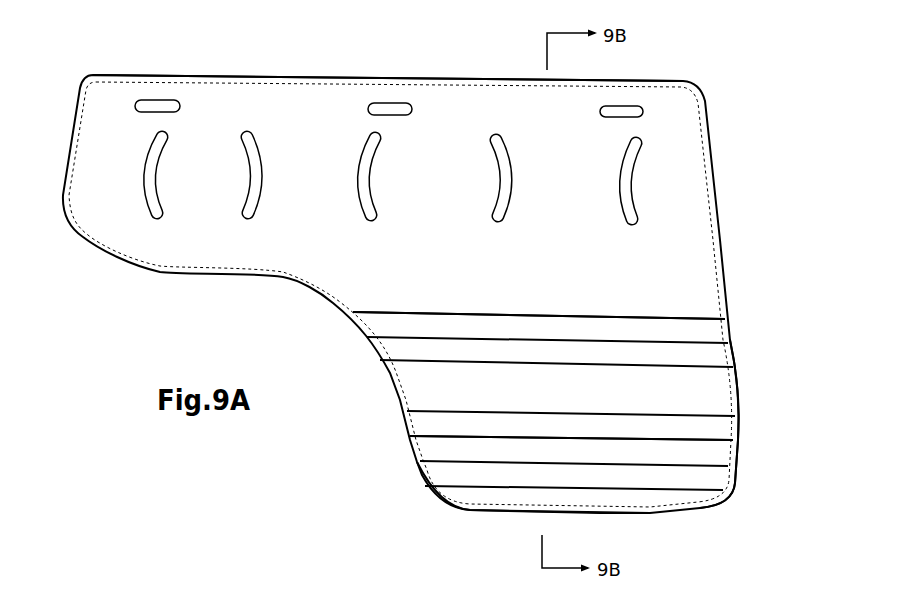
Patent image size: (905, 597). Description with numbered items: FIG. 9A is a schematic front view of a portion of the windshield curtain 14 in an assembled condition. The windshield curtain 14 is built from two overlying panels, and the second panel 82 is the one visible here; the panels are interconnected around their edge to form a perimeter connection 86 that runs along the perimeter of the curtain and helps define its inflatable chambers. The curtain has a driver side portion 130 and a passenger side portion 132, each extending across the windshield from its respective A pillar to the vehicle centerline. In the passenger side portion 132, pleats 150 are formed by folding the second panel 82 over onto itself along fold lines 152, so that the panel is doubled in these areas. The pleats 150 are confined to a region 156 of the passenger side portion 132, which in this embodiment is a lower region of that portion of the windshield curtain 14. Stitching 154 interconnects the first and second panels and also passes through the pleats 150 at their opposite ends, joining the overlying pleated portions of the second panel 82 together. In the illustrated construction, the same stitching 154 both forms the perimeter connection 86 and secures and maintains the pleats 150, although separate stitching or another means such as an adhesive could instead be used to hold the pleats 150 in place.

The windshield curtain 14 is at (260, 58).
The perimeter connection 86 is at (337, 88).
The stitching 154 is at (447, 88).
The driver side portion 130 is at (203, 212).
The pleats 150 is at (427, 323).
The fold lines 152 is at (632, 365).
The passenger side portion 132 is at (482, 383).
The second panel 82 is at (693, 397).
The region 156 is at (746, 458).